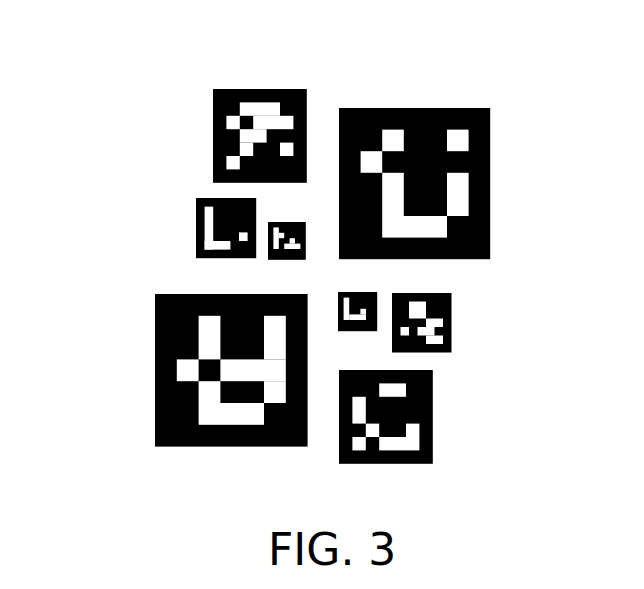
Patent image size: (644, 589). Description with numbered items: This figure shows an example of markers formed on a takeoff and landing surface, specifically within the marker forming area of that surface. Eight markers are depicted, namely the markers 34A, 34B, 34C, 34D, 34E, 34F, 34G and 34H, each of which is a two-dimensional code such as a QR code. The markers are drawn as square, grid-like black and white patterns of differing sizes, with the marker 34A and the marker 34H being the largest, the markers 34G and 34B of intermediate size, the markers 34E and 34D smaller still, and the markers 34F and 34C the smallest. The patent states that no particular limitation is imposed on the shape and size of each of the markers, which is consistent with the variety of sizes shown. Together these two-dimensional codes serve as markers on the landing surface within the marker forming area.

The marker 34A is at (155, 378).
The marker 34B is at (433, 427).
The marker 34C is at (375, 293).
The marker 34D is at (450, 323).
The marker 34E is at (195, 228).
The marker 34F is at (268, 258).
The marker 34G is at (260, 89).
The marker 34H is at (408, 108).